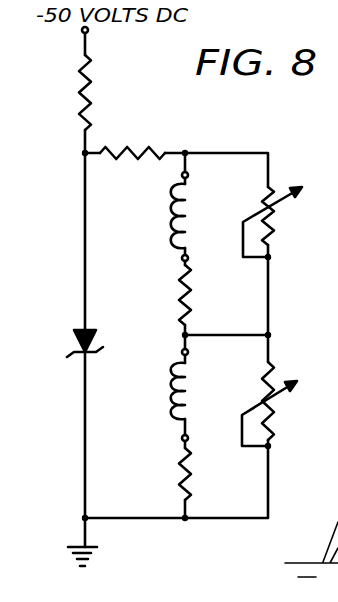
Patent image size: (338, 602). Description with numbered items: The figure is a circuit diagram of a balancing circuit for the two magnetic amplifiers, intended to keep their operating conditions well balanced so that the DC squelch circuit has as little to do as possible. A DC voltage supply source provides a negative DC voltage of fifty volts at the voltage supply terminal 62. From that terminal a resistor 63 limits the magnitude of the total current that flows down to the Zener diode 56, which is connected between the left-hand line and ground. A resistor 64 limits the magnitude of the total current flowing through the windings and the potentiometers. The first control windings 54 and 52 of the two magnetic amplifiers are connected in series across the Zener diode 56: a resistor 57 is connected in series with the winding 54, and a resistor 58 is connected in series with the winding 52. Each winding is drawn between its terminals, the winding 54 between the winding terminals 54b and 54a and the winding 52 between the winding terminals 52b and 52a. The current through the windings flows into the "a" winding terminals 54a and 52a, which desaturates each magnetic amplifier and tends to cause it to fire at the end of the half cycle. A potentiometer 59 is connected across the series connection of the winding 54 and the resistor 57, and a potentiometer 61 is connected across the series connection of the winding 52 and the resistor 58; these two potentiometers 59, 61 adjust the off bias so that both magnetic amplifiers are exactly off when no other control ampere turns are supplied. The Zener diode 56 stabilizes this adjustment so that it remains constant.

The voltage supply terminal 62 is at (82, 33).
The resistor 63 is at (80, 94).
The resistor 64 is at (134, 148).
The winding terminal 54b is at (181, 177).
The first control winding 54 is at (178, 208).
The winding terminal 54a is at (181, 258).
The resistor 57 is at (180, 298).
The winding terminal 52b is at (181, 352).
The first control winding 52 is at (180, 392).
The winding terminal 52a is at (181, 438).
The resistor 58 is at (180, 470).
The Zener diode 56 is at (70, 345).
The potentiometer 59 is at (270, 233).
The potentiometer 61 is at (272, 418).